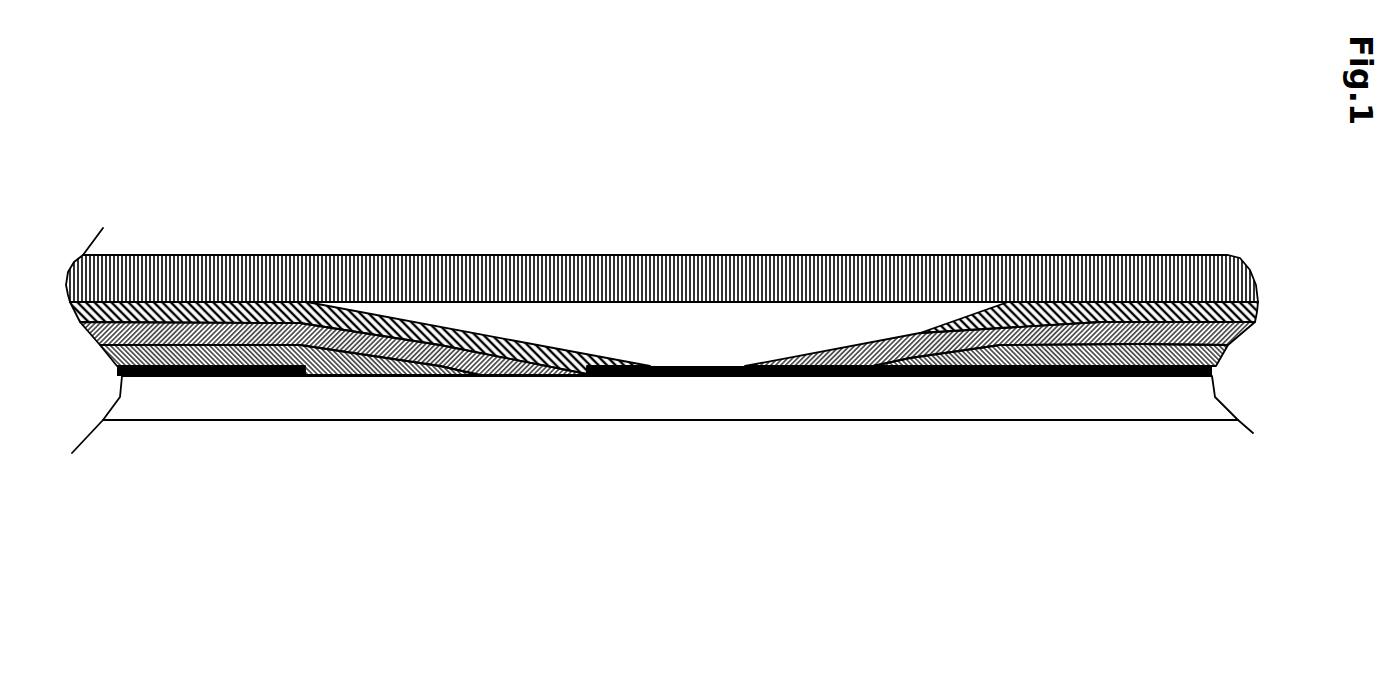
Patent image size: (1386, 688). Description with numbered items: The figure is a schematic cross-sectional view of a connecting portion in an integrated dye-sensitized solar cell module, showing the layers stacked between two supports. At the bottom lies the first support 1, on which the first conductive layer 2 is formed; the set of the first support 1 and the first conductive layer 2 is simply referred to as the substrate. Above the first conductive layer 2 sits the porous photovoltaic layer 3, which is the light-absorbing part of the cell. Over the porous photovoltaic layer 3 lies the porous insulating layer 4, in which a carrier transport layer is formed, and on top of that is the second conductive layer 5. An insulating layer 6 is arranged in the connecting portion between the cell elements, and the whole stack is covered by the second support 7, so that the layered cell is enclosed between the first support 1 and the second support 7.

The first support 1 is at (670, 484).
The first conductive layer 2 is at (664, 484).
The porous photovoltaic layer 3 is at (664, 474).
The porous insulating layer 4 is at (667, 224).
The second conductive layer 5 is at (665, 232).
The insulating layer 6 is at (657, 230).
The second support 7 is at (662, 192).